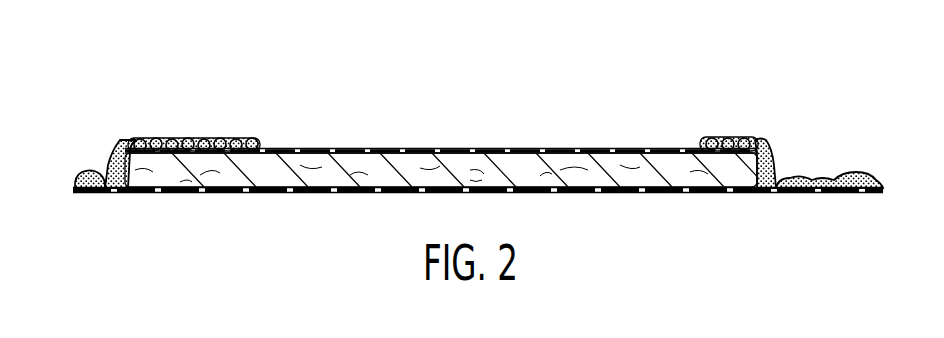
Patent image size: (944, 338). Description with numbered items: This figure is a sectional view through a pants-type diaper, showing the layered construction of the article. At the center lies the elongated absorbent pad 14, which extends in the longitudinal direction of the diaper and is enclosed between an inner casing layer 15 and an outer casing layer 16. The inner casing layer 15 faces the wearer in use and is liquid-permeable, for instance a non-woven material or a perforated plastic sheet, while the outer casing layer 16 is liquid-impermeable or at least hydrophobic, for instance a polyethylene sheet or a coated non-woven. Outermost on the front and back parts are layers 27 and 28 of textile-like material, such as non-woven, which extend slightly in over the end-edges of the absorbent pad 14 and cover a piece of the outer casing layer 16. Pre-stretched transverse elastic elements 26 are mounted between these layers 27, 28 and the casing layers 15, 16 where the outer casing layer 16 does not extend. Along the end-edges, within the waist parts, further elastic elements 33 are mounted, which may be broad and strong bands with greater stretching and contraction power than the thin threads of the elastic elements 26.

The absorbent pad 14 is at (590, 178).
The inner casing layer 15 is at (229, 190).
The outer casing layer 16 is at (652, 150).
The transverse elastic elements 26 is at (137, 138).
The front layer of textile-like material 27 is at (257, 140).
The back layer of textile-like material 28 is at (713, 138).
The waist elastic elements 33 is at (92, 171).